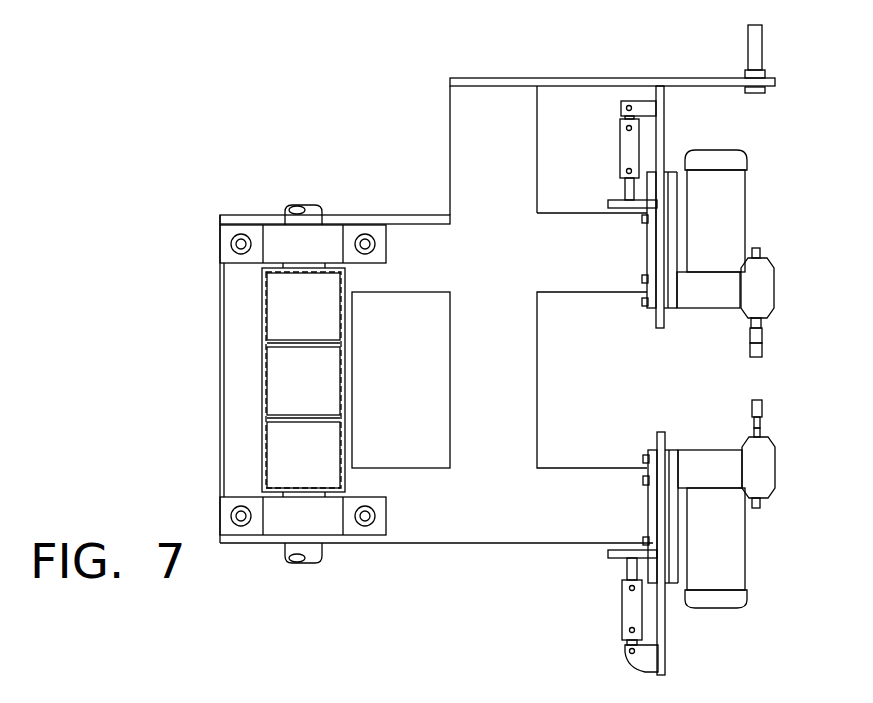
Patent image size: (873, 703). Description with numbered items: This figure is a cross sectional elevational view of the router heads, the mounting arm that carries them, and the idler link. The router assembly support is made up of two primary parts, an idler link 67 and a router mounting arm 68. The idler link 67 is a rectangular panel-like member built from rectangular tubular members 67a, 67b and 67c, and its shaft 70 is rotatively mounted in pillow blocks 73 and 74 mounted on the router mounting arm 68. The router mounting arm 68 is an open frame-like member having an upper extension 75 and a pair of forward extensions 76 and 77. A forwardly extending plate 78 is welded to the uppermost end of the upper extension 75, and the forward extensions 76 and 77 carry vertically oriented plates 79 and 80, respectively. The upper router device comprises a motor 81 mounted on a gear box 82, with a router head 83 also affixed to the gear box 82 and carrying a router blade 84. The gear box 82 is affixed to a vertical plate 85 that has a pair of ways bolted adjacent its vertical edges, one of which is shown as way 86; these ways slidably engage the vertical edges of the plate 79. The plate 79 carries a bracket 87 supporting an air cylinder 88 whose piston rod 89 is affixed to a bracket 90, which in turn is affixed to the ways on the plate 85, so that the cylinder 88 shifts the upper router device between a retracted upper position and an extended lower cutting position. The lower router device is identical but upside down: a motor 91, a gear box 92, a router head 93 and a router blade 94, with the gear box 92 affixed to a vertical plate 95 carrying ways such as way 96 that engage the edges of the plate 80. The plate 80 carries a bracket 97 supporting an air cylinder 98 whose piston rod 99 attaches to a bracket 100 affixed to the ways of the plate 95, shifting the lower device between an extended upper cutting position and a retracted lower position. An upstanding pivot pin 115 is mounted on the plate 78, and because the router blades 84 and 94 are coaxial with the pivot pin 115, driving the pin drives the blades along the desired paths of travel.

The idler link 67 is at (248, 380).
The rectangular tubular member 67a is at (262, 297).
The rectangular tubular member 67b is at (262, 395).
The rectangular tubular member 67c is at (262, 458).
The router mounting arm 68 is at (452, 533).
The shaft 70 is at (312, 213).
The pillow block 73 is at (332, 233).
The pillow block 74 is at (278, 522).
The upper extension 75 is at (502, 147).
The forward extension 76 is at (588, 251).
The forward extension 77 is at (587, 531).
The forwardly extending plate 78 is at (558, 82).
The vertically oriented plate 79 is at (664, 127).
The vertically oriented plate 80 is at (665, 633).
The motor 81 is at (730, 193).
The gear box 82 is at (718, 305).
The router head 83 is at (763, 280).
The router blade 84 is at (763, 352).
The vertical plate 85 is at (675, 225).
The way 86 is at (653, 262).
The bracket 87 is at (637, 101).
The air cylinder 88 is at (625, 145).
The piston rod 89 is at (625, 190).
The bracket 90 is at (608, 203).
The motor 91 is at (735, 553).
The gear box 92 is at (725, 452).
The router head 93 is at (767, 472).
The router blade 94 is at (763, 410).
The vertical plate 95 is at (675, 527).
The way 96 is at (658, 497).
The bracket 97 is at (643, 658).
The air cylinder 98 is at (622, 610).
The piston rod 99 is at (625, 572).
The bracket 100 is at (608, 553).
The pivot pin 115 is at (750, 35).